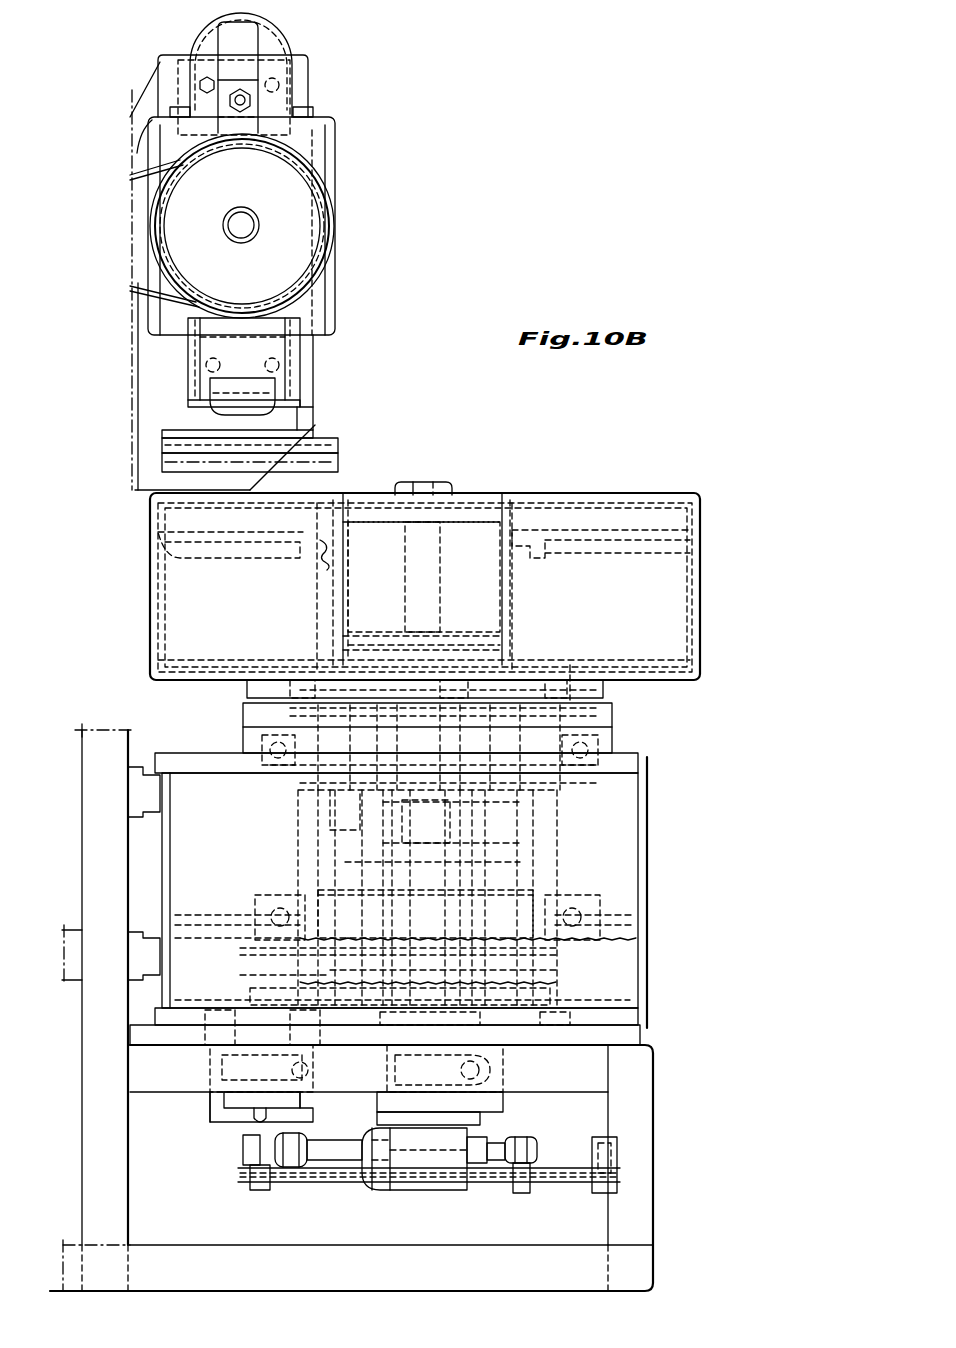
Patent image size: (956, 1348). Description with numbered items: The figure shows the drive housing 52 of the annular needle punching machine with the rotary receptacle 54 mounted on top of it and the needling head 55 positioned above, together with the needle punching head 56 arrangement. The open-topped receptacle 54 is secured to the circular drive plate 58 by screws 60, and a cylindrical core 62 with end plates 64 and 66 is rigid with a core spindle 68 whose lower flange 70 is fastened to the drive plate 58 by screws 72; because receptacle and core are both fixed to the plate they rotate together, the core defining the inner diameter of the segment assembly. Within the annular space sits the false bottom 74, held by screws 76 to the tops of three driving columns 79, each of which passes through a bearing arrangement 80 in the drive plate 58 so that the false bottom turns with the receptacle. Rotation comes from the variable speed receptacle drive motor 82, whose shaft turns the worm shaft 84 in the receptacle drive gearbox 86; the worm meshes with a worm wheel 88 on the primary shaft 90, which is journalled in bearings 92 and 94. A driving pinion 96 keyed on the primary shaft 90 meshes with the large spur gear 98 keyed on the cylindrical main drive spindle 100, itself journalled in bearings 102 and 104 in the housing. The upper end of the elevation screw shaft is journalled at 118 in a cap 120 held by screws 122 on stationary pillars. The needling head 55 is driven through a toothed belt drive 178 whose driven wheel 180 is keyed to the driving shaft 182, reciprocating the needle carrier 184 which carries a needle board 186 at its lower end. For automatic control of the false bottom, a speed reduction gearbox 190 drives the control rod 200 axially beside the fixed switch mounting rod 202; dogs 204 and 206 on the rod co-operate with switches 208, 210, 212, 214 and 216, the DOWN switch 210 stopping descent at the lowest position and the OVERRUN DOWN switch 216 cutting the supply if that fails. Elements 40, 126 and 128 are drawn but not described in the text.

The cutting head 40 is at (605, 510).
The drive housing 52 is at (645, 882).
The rotary receptacle 54 is at (700, 595).
The needling head 55 is at (332, 367).
The closed bottom 56 is at (650, 680).
The drive plate 58 is at (441, 728).
The screws 60 is at (570, 668).
The cylindrical core 62 is at (508, 596).
The end plate 64 is at (477, 510).
The end plate 66 is at (476, 640).
The core spindle 68 is at (412, 608).
The flange 70 is at (520, 674).
The screws 72 is at (340, 652).
The annular false bottom 74 is at (630, 550).
The screws 76 is at (320, 540).
The driving columns 79 is at (320, 618).
The bearing arrangement 80 is at (300, 680).
The receptacle drive motor 82 is at (322, 1082).
The worm shaft 84 is at (322, 1106).
The receptacle drive gearbox 86 is at (210, 1096).
The worm wheel 88 is at (210, 1096).
The primary shaft 90 is at (240, 998).
The bearing 92 is at (240, 985).
The bearing 94 is at (205, 1052).
The driving pinion 96 is at (240, 960).
The large spur gear 98 is at (610, 962).
The main drive spindle 100 is at (298, 867).
The bearing 102 is at (243, 735).
The bearing 104 is at (270, 912).
The journal 118 is at (555, 802).
The cap 120 is at (612, 736).
The screws 122 is at (380, 750).
The drive unit 126 is at (432, 918).
The shaft 128 is at (395, 913).
The toothed belt drive 178 is at (150, 170).
The driven wheel 180 is at (322, 232).
The driving shaft 182 is at (243, 238).
The needle carrier 184 is at (307, 393).
The needle board 186 is at (337, 460).
The speed reduction gearbox 190 is at (480, 1132).
The control rod 200 is at (372, 1160).
The switch mounting rod 202 is at (290, 1170).
The dog 204 is at (335, 1162).
The dog 206 is at (528, 1138).
The switch 208 is at (243, 1150).
The DOWN switch 210 is at (372, 1168).
The switch 212 is at (480, 1165).
The switch 214 is at (532, 1188).
The OVERRUN DOWN switch 216 is at (603, 1188).